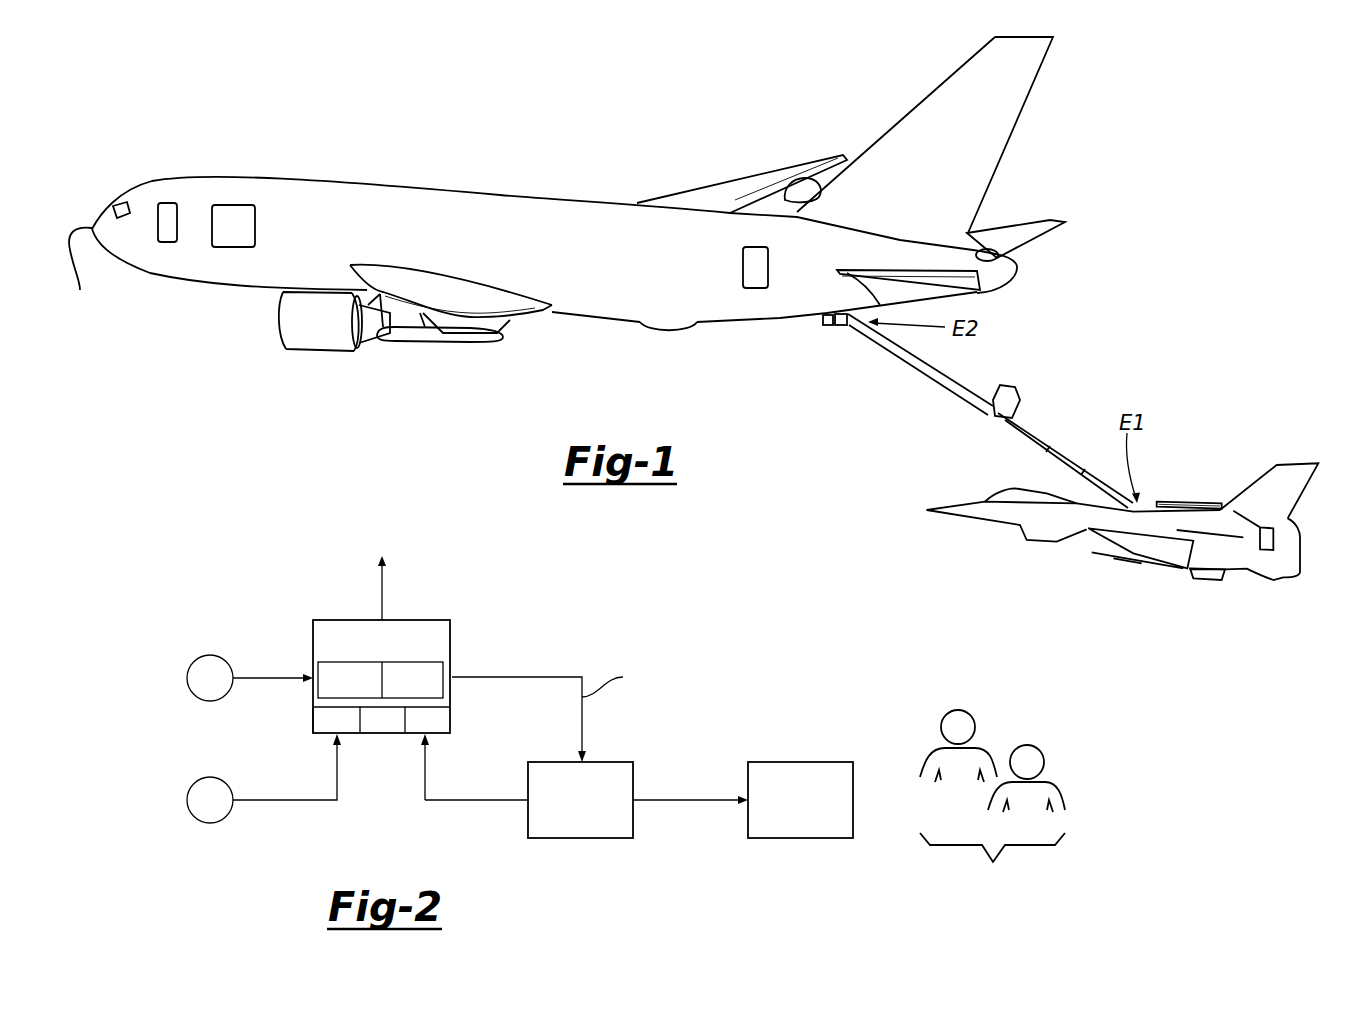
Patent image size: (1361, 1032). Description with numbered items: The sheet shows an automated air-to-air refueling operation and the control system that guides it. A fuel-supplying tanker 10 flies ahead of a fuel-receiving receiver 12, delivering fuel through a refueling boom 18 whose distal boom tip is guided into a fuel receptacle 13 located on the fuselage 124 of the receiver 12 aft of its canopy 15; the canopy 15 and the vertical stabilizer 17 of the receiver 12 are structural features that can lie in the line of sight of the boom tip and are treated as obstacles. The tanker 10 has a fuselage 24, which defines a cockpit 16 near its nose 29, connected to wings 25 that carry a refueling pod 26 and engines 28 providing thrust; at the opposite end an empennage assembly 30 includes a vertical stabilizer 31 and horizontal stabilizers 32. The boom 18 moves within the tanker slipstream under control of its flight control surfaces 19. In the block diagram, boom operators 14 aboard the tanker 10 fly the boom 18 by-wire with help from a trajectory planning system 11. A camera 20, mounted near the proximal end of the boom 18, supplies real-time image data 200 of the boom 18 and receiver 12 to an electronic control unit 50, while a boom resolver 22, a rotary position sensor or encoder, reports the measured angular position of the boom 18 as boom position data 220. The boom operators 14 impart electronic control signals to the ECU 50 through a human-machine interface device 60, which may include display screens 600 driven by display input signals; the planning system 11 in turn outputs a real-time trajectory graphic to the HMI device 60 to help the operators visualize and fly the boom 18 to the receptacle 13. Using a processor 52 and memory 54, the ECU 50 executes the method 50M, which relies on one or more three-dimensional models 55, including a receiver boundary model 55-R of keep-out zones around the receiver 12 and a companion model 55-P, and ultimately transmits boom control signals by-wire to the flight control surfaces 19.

In FIG. 1, the fuel-supplying aircraft (tanker) 10 is at (303, 124).
In FIG. 1, the trajectory planning system 11 is at (233, 226).
In FIG. 2, the trajectory planning system 11 is at (518, 590).
In FIG. 1, the fuel-receiving aircraft (receiver) 12 is at (1193, 414).
In FIG. 1, the fuel receptacle 13 is at (1090, 520).
In FIG. 2, the boom operators 14 is at (992, 803).
In FIG. 1, the canopy 15 is at (1000, 489).
In FIG. 1, the cockpit 16 is at (110, 190).
In FIG. 1, the vertical stabilizer 17 is at (1273, 483).
In FIG. 1, the refueling boom 18 is at (910, 397).
In FIG. 1, the flight control surfaces 19 is at (1040, 381).
In FIG. 1, the camera 20 is at (842, 327).
In FIG. 2, the camera 20 is at (162, 678).
In FIG. 1, the boom resolver 22 is at (827, 320).
In FIG. 2, the boom resolver 22 is at (177, 830).
In FIG. 1, the fuselage 24 is at (437, 207).
In FIG. 1, the wings 25 is at (473, 297).
In FIG. 1, the refueling pod 26 is at (425, 335).
In FIG. 1, the engines 28 is at (313, 327).
In FIG. 1, the nose 29 is at (83, 276).
In FIG. 1, the empennage assembly 30 is at (1122, 90).
In FIG. 1, the vertical stabilizer 31 is at (987, 147).
In FIG. 1, the horizontal stabilizers 32 is at (1030, 230).
In FIG. 1, the fuselage 124 is at (1020, 513).
In FIG. 2, the electronic control unit (ECU) 50 is at (337, 620).
In FIG. 2, the processor 52 is at (336, 720).
In FIG. 2, the memory 54 is at (387, 720).
In FIG. 2, the method 50M is at (430, 721).
In FIG. 2, the 3D models 55 is at (425, 663).
In FIG. 2, the receiver boundary model 55-R is at (353, 682).
In FIG. 2, the pitch logic 55-P is at (452, 673).
In FIG. 2, the human-machine interface (HMI) device 60 is at (582, 838).
In FIG. 2, the display screens 600 is at (803, 838).
In FIG. 2, the real-time image data 200 is at (267, 677).
In FIG. 2, the boom position data 220 is at (277, 798).